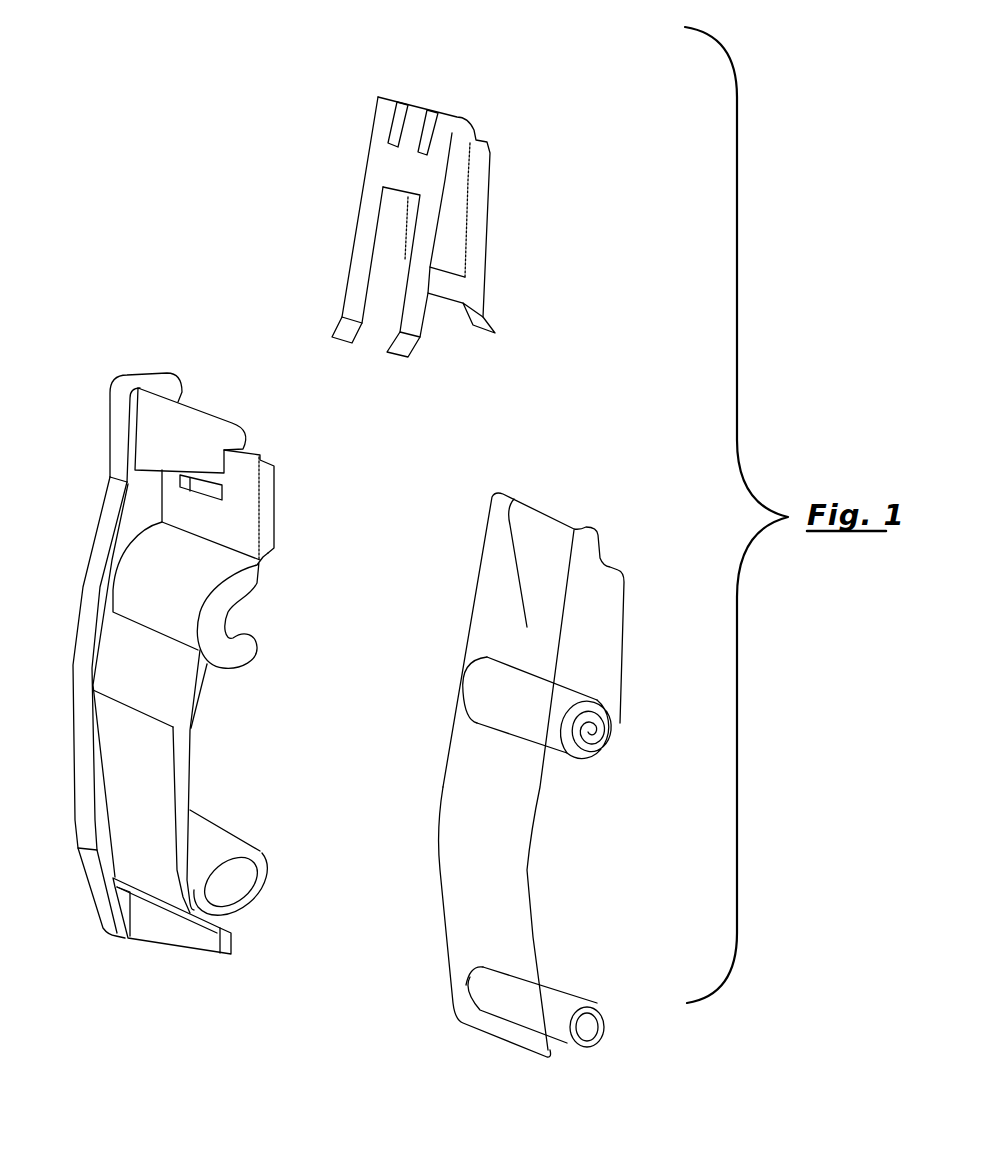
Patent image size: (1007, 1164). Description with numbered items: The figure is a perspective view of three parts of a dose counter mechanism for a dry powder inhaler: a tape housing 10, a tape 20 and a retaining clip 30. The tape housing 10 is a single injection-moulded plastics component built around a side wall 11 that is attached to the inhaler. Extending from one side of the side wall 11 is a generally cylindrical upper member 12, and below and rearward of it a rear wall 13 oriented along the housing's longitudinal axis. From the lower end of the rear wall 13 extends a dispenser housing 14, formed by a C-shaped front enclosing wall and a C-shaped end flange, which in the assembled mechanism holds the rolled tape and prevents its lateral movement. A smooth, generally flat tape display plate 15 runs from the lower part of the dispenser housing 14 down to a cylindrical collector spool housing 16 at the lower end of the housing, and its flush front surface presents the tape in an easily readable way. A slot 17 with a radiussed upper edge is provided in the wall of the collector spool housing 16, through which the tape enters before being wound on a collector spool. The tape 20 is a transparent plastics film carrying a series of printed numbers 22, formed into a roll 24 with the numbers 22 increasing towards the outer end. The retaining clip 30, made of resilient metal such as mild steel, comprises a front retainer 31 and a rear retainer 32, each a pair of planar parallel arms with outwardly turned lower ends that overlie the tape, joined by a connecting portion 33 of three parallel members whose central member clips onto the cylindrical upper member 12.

The tape housing 10 is at (112, 364).
The side wall 11 is at (105, 522).
The cylindrical upper member 12 is at (193, 413).
The rear wall 13 is at (270, 498).
The dispenser housing 14 is at (243, 648).
The tape display plate 15 is at (182, 760).
The collector spool housing 16 is at (250, 843).
The slot 17 is at (163, 907).
The tape 20 is at (647, 551).
The numbers 22 is at (503, 870).
The roll 24 is at (620, 727).
The retaining clip 30 is at (537, 132).
The front retainer 31 is at (360, 253).
The rear retainer 32 is at (478, 238).
The connecting portion 33 is at (385, 102).